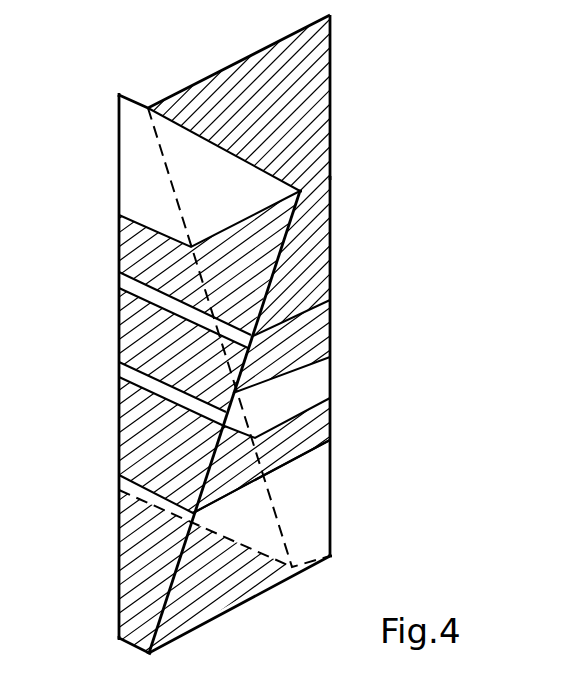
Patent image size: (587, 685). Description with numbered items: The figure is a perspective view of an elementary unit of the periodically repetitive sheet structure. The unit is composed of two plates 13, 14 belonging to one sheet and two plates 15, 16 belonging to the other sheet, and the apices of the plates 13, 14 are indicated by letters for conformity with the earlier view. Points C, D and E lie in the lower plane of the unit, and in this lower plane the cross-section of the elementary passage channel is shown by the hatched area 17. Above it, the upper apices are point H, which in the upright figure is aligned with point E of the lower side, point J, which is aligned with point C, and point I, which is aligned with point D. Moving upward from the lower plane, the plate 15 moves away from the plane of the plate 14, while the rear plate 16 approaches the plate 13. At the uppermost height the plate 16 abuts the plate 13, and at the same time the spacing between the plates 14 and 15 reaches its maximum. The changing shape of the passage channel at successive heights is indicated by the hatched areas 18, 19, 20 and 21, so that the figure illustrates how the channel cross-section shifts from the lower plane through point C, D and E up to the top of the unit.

The plate 13 is at (133, 158).
The plate 14 is at (333, 500).
The plate 15 is at (226, 67).
The rear plate 16 is at (148, 107).
The hatched area 17 is at (133, 556).
The hatched area 18 is at (133, 428).
The hatched area 19 is at (133, 330).
The hatched area 20 is at (318, 257).
The hatched area 21 is at (318, 92).
The point H is at (119, 95).
The point I is at (300, 191).
The point J is at (330, 178).
The point C is at (108, 641).
The point D is at (151, 667).
The point E is at (339, 560).